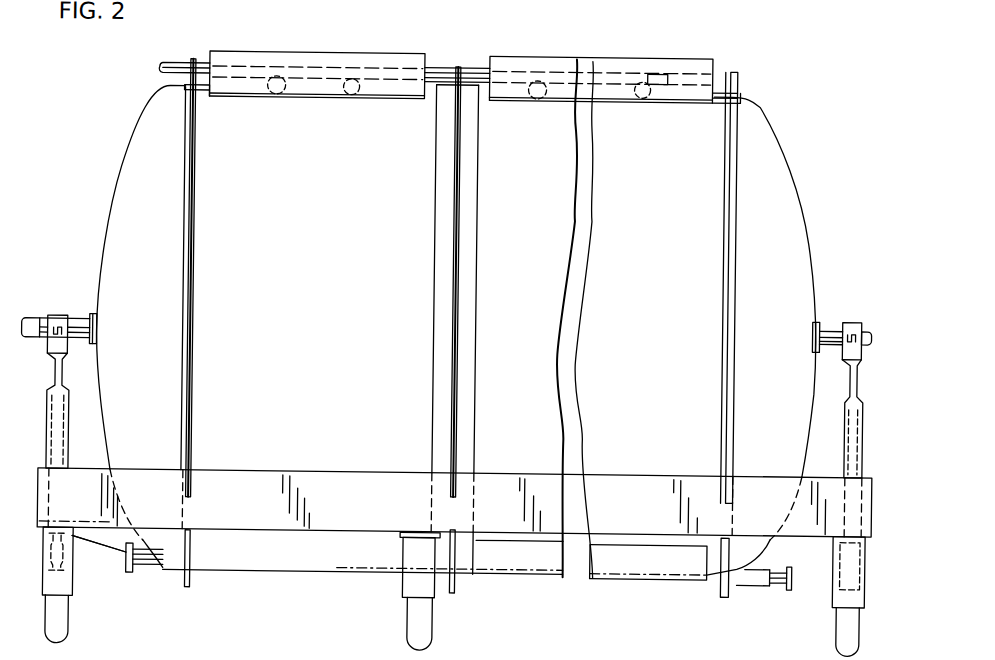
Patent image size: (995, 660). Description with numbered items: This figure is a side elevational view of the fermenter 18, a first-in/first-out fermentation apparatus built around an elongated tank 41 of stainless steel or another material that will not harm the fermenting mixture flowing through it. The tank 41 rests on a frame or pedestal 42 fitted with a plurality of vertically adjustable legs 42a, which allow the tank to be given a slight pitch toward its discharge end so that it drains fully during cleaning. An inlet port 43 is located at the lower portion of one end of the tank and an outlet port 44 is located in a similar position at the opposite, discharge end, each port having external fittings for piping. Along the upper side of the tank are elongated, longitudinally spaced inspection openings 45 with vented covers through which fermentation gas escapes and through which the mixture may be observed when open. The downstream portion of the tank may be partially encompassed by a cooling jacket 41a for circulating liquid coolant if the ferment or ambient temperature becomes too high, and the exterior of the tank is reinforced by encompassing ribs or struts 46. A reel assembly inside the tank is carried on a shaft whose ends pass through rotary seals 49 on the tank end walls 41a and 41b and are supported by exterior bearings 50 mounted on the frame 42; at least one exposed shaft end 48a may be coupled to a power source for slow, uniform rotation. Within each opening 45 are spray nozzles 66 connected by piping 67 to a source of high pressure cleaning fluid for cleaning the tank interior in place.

The fermenter 18 is at (464, 326).
The tank 41 is at (464, 355).
The cooling jacket 41a is at (136, 186).
The tank end wall 41b is at (769, 193).
The frame 42 is at (406, 579).
The vertically adjustable legs 42a is at (62, 618).
The inlet port 43 is at (147, 571).
The outlet port 44 is at (779, 579).
The inspection openings 45 is at (225, 55).
The ribs 46 is at (434, 363).
The shaft end 48a is at (30, 322).
The rotary seals 49 is at (93, 314).
The exterior bearings 50 is at (75, 297).
The spray nozzles 66 is at (341, 101).
The piping 67 is at (164, 72).